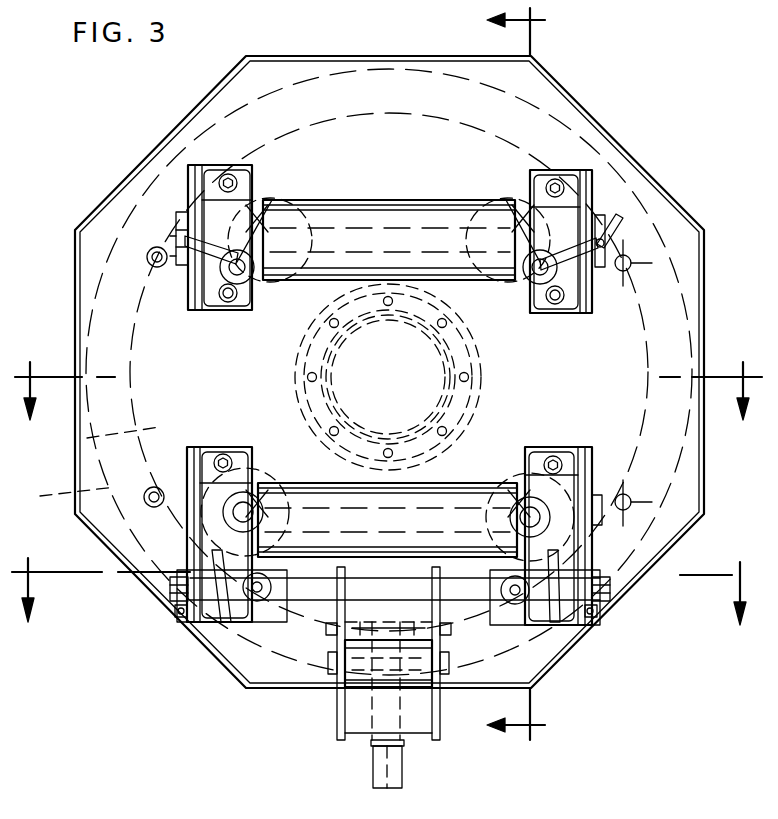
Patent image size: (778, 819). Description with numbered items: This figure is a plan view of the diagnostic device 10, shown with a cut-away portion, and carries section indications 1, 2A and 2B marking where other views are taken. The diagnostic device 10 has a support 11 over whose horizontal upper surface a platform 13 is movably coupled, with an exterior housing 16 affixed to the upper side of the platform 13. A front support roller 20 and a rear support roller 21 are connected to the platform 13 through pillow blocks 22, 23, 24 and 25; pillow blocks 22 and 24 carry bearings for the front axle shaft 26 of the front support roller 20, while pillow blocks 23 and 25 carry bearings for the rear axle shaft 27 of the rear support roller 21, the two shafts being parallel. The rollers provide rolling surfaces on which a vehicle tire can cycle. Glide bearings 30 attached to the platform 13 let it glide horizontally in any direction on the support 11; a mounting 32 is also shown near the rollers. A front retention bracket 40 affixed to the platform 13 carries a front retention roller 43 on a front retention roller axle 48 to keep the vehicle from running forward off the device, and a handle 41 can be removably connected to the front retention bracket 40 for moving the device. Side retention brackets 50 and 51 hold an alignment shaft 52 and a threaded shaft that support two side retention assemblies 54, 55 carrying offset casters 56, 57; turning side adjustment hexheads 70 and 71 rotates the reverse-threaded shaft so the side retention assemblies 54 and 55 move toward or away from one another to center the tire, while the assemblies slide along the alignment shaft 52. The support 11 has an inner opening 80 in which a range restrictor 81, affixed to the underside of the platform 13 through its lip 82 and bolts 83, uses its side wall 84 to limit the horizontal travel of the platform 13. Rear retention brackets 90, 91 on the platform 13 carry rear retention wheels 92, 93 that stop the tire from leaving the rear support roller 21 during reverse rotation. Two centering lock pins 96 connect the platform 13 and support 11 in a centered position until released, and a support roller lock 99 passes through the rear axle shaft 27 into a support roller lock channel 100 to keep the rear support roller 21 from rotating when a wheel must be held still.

The diagnostic device 10 is at (75, 168).
The support 11 is at (80, 441).
The platform 13 is at (352, 372).
The exterior housing 16 is at (70, 468).
The front support roller 20 is at (455, 495).
The rear support roller 21 is at (386, 200).
The pillow block 22 is at (565, 462).
The pillow block 23 is at (565, 310).
The pillow block 24 is at (208, 450).
The pillow block 25 is at (212, 312).
The front axle shaft 26 is at (282, 492).
The rear axle shaft 27 is at (200, 224).
The glide bearings 30 is at (278, 180).
The bearing mount 32 is at (505, 290).
The front retention bracket 40 is at (338, 722).
The handle 41 is at (380, 770).
The front retention roller 43 is at (425, 670).
The front retention roller axle 48 is at (345, 665).
The side retention bracket 50 is at (195, 612).
The side retention bracket 51 is at (592, 530).
The alignment shaft 52 is at (582, 600).
The side retention assembly 54 is at (215, 622).
The side retention assembly 55 is at (562, 625).
The offset caster 56 is at (272, 600).
The offset caster 57 is at (505, 615).
The side adjustment hexhead 70 is at (180, 586).
The side adjustment hexhead 71 is at (605, 590).
The inner opening 80 is at (472, 347).
The range restrictor 81 is at (445, 403).
The lip 82 is at (410, 318).
The bolts 83 is at (310, 372).
The side wall 84 is at (478, 372).
The rear retention bracket 90 is at (592, 178).
The rear retention bracket 91 is at (195, 175).
The rear retention wheel 92 is at (520, 300).
The rear retention wheel 93 is at (205, 295).
The centering lock pins 96 is at (632, 264).
The support roller lock 99 is at (618, 216).
The support roller lock channel 100 is at (180, 242).
The section line 1 is at (527, 374).
The section line 2A is at (385, 579).
The section line 2B is at (388, 378).